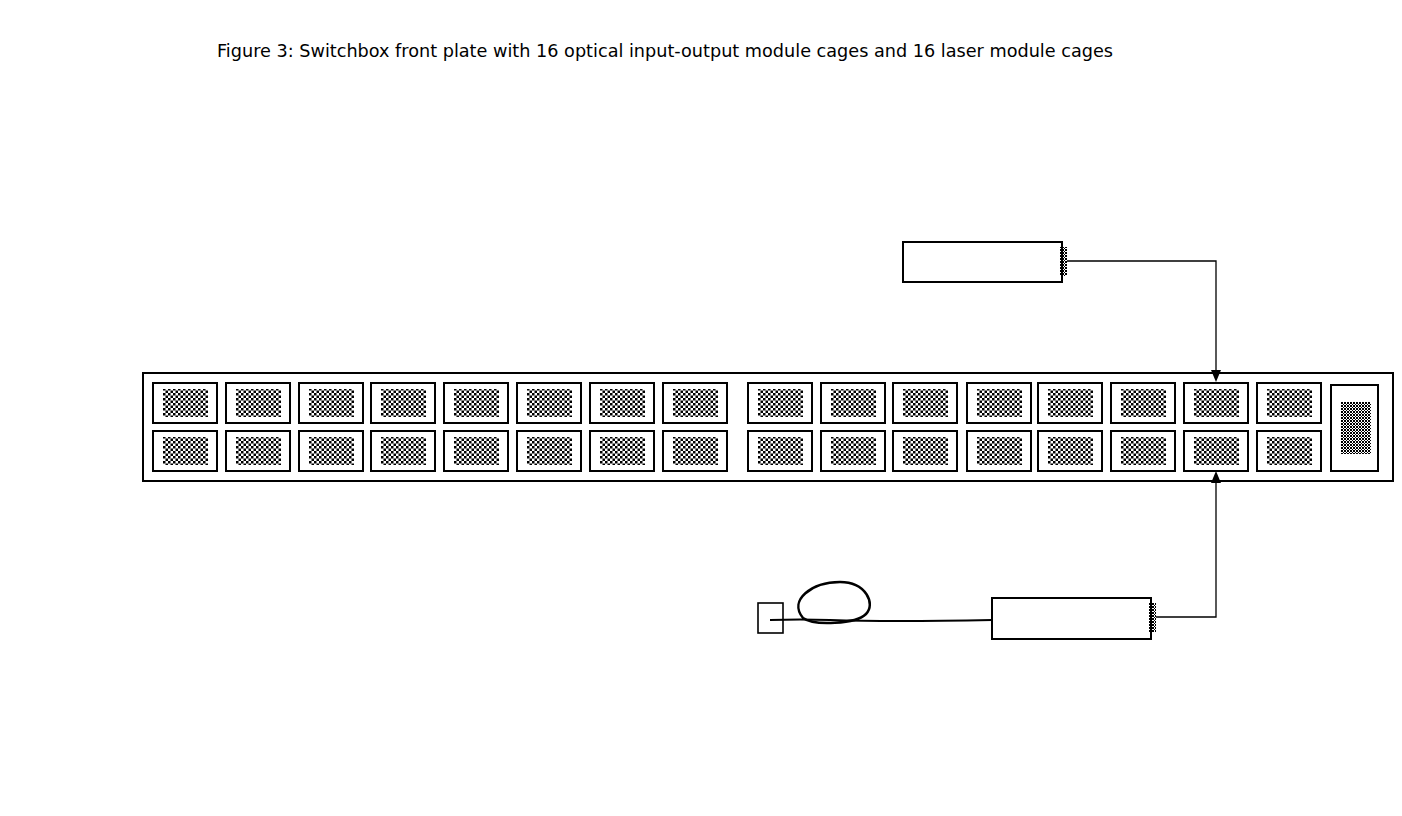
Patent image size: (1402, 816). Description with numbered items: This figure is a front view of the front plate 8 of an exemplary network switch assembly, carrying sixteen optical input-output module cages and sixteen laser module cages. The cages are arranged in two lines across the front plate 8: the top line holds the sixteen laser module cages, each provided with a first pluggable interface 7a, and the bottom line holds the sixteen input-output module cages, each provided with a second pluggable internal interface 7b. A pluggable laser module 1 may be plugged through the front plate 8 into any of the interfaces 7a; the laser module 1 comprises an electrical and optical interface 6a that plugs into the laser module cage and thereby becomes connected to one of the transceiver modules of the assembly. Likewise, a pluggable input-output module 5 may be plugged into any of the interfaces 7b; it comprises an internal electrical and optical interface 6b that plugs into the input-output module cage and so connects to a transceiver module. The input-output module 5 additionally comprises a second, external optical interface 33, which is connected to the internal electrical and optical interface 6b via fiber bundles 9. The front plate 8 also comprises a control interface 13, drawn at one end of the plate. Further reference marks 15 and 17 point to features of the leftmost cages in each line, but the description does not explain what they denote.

The pluggable laser module 1 is at (930, 251).
The pluggable input-output module 5 is at (1018, 626).
The electrical and optical interface 6a is at (1060, 255).
The internal electrical and optical interface 6b is at (1150, 612).
The first pluggable interface 7a is at (331, 384).
The second pluggable interface 7b is at (331, 472).
The front plate 8 is at (789, 373).
The fiber bundles 9 is at (875, 622).
The control interface 13 is at (1355, 402).
The cage opening 15 is at (330, 414).
The cage electrical connector 17 is at (344, 399).
The external optical interface 33 is at (765, 615).